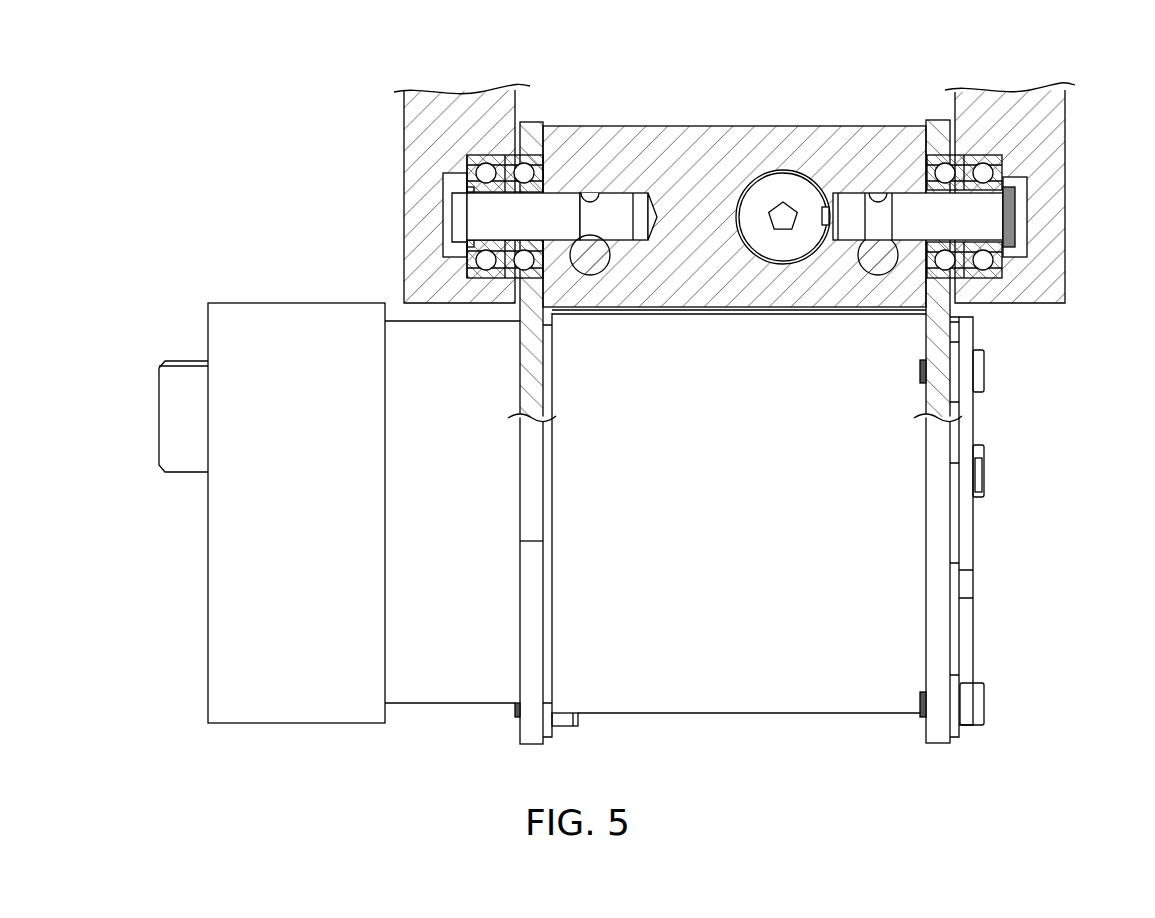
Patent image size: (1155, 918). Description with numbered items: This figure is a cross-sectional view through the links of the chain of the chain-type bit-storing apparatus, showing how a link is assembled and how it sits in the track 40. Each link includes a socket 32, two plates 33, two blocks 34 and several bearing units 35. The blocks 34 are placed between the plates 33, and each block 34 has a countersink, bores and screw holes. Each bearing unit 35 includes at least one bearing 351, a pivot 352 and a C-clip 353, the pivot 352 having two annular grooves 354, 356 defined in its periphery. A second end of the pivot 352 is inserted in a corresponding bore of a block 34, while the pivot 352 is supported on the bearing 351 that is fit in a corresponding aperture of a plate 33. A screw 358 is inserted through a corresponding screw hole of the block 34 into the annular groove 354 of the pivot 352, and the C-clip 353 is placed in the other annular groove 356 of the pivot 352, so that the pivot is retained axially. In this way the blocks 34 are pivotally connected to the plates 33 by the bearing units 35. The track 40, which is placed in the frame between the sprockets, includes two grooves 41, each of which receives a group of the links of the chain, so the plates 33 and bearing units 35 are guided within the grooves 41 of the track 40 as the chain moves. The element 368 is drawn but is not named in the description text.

The socket 32 is at (230, 590).
The plate 33 is at (532, 126).
The block 34 is at (770, 145).
The bearing unit 35 is at (904, 185).
The track 40 is at (415, 115).
The groove 41 is at (489, 166).
The bearing 351 is at (470, 274).
The pivot 352 is at (620, 205).
The C-clip 353 is at (465, 190).
The annular groove 354 is at (593, 197).
The annular groove 356 is at (467, 220).
The screw 358 is at (598, 258).
The end cap 368 is at (1030, 225).